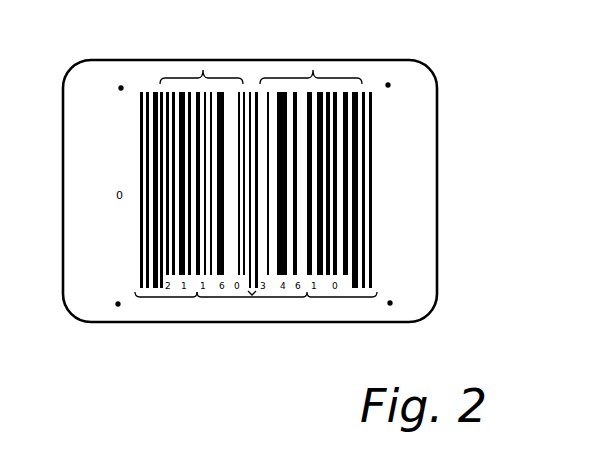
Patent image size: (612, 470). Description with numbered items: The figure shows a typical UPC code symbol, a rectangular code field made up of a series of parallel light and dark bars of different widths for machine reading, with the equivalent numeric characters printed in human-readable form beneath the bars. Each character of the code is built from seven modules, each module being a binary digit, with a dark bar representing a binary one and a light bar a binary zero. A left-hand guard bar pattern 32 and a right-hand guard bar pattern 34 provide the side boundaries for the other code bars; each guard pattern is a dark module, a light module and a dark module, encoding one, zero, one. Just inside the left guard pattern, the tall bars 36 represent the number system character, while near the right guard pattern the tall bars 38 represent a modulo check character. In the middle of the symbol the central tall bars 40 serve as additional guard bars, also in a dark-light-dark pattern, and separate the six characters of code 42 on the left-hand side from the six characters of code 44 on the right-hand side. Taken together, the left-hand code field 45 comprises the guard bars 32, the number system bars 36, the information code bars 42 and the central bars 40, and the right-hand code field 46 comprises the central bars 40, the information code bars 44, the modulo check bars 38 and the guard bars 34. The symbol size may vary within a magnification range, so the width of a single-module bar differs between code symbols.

The left-hand guard bar pattern 32 is at (142, 91).
The right-hand guard bar pattern 34 is at (370, 91).
The tall bars representing the number system character 36 is at (156, 289).
The tall bars representing the modulo check character 38 is at (357, 289).
The central tall bars 40 is at (253, 91).
The six characters of code on the left-hand side 42 is at (203, 69).
The six characters of code on the right-hand side 44 is at (313, 69).
The left-hand code field 45 is at (197, 298).
The right-hand code field 46 is at (307, 298).